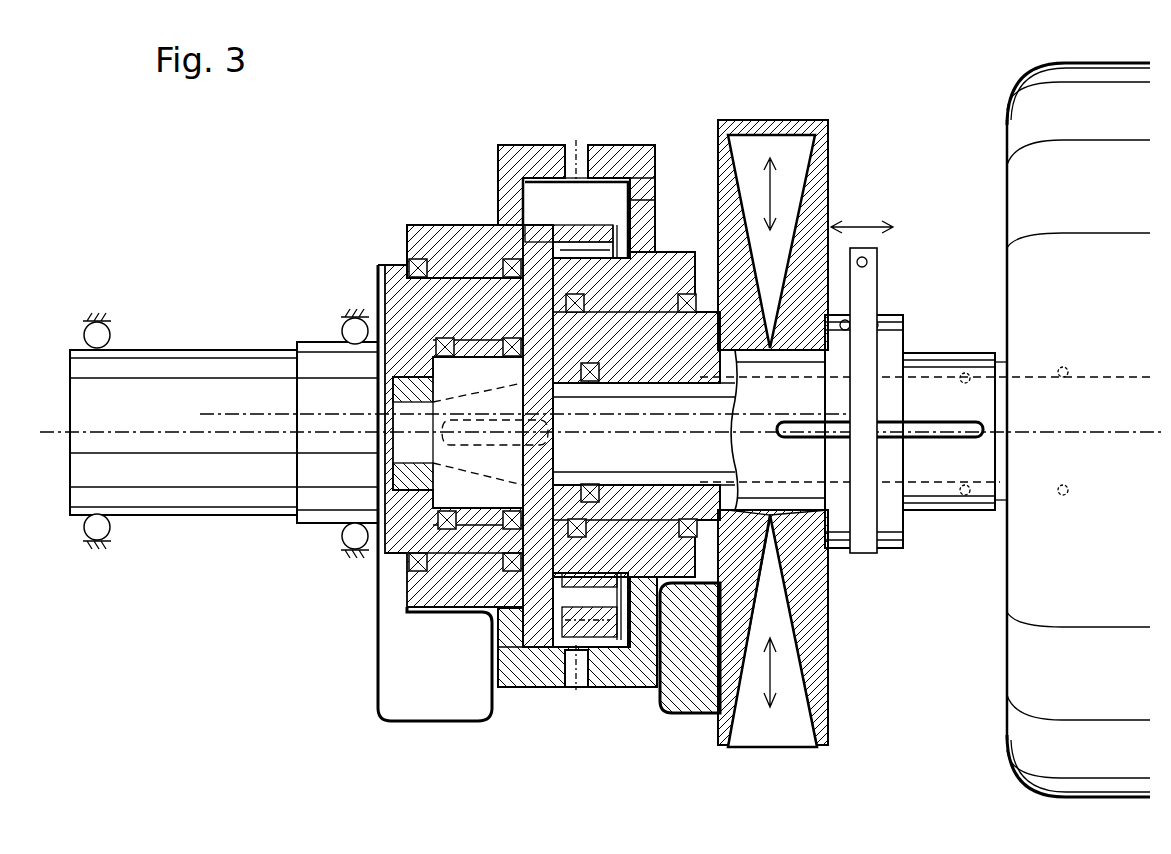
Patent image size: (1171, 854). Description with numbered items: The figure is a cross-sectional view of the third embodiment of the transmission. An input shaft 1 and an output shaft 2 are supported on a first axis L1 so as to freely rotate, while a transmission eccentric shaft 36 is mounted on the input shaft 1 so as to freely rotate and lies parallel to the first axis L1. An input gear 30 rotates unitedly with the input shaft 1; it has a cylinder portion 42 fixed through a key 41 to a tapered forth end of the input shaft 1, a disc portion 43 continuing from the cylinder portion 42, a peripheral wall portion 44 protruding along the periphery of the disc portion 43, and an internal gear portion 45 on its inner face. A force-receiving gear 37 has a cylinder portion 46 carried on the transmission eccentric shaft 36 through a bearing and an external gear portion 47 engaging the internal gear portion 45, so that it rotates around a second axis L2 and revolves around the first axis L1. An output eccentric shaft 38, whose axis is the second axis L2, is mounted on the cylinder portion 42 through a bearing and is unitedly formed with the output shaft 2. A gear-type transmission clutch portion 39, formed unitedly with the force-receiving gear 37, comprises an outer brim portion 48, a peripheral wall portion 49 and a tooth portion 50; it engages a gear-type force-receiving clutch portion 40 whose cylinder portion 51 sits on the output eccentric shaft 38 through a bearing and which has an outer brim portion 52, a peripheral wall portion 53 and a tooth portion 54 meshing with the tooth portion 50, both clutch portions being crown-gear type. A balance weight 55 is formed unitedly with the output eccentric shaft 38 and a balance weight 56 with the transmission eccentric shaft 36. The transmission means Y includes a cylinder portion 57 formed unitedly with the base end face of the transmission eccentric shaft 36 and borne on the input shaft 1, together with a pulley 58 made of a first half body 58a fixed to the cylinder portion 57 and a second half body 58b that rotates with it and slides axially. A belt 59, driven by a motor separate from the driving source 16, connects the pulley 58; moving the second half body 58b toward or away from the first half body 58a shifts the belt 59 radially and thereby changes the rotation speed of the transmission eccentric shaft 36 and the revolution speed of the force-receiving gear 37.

The input shaft 1 is at (791, 482).
The output shaft 2 is at (196, 348).
The driving source 16 is at (1007, 745).
The input gear 30 is at (606, 636).
The transmission eccentric shaft 36 is at (661, 300).
The force-receiving gear 37 is at (569, 650).
The output eccentric shaft 38 is at (467, 360).
The gear-type transmission clutch portion 39 is at (612, 144).
The gear-type force-receiving clutch portion 40 is at (508, 144).
The key 41 is at (408, 441).
The cylinder portion 42 is at (447, 290).
The disc portion 43 is at (474, 274).
The peripheral wall portion 44 is at (560, 224).
The internal gear portion 45 is at (604, 632).
The cylinder portion 46 is at (622, 246).
The external gear portion 47 is at (584, 600).
The outer brim portion 48 is at (648, 188).
The peripheral wall portion 49 is at (625, 162).
The tooth portion 50 is at (558, 148).
The cylinder portion 51 is at (437, 598).
The outer brim portion 52 is at (506, 645).
The peripheral wall portion 53 is at (528, 678).
The tooth portion 54 is at (596, 150).
The balance weight 55 is at (428, 716).
The balance weight 56 is at (692, 722).
The cylinder portion 57 is at (923, 353).
The pulley 58 is at (830, 785).
The first half body 58a is at (735, 748).
The second half body 58b is at (815, 748).
The belt 59 is at (769, 120).
The first axis L1 is at (148, 436).
The second axis L2 is at (243, 418).
The transmission means Y is at (867, 165).